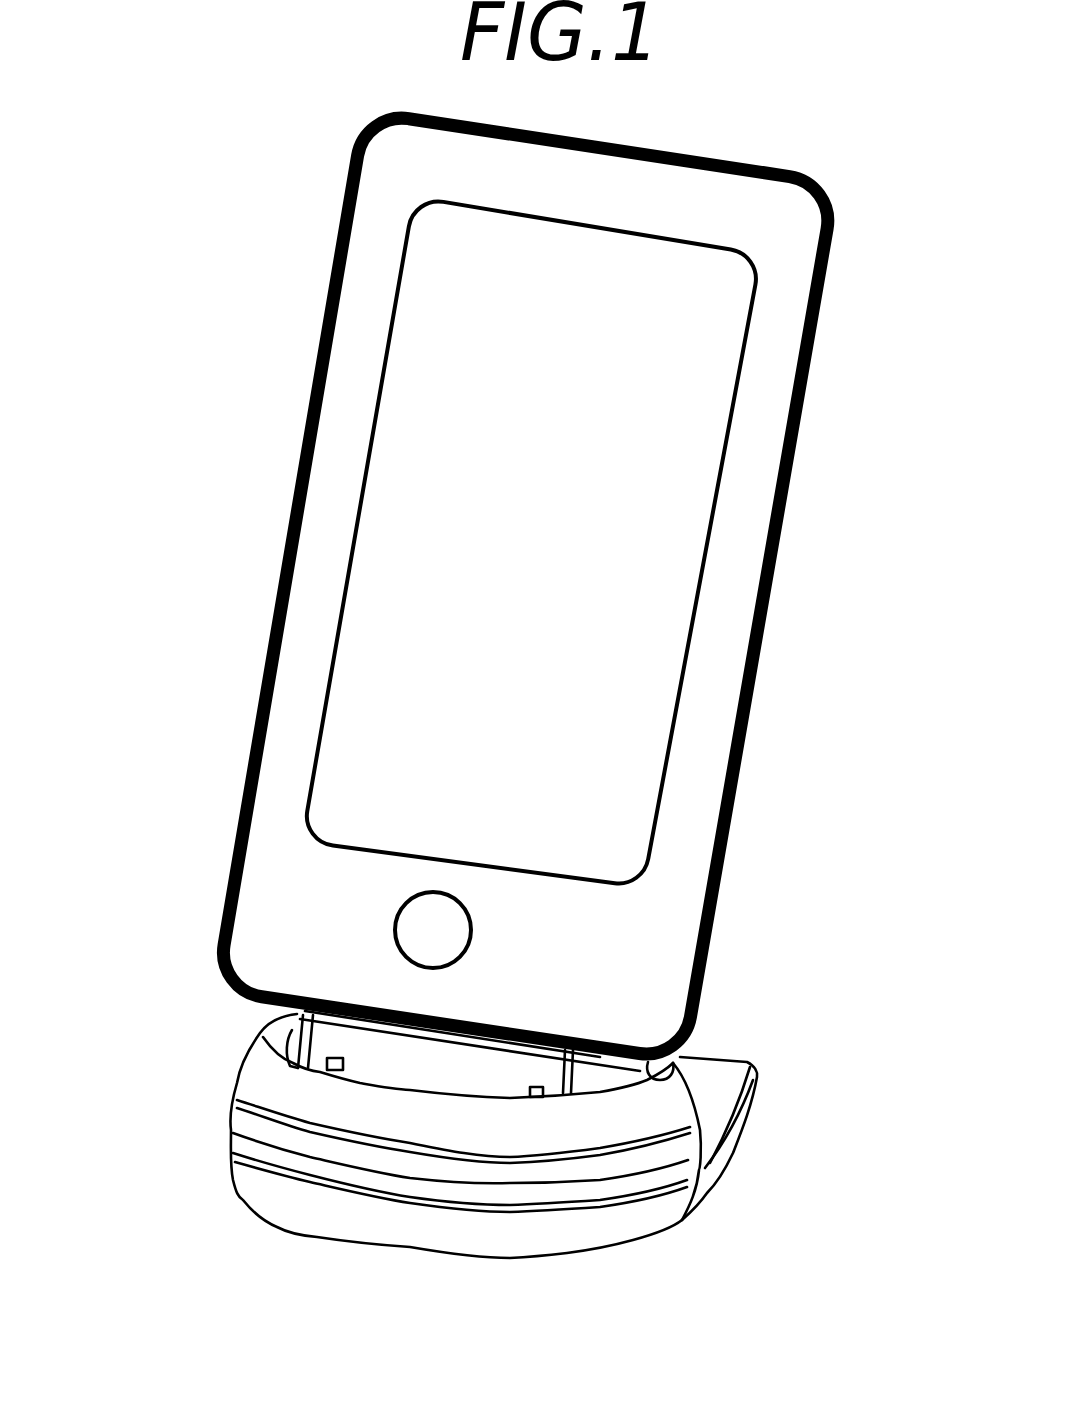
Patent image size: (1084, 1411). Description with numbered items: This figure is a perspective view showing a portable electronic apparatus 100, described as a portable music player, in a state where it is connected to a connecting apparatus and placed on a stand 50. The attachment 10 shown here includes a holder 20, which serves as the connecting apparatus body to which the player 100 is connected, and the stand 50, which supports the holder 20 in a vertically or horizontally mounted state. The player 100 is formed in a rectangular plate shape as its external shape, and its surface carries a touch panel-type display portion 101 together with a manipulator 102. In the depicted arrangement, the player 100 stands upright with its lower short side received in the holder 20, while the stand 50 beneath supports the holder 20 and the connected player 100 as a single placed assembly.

The portable electronic apparatus 100 is at (782, 422).
The touch panel-type display portion 101 is at (435, 552).
The manipulator 102 is at (430, 928).
The attachment 10 is at (681, 1218).
The holder 20 is at (392, 1055).
The stand 50 is at (747, 1117).